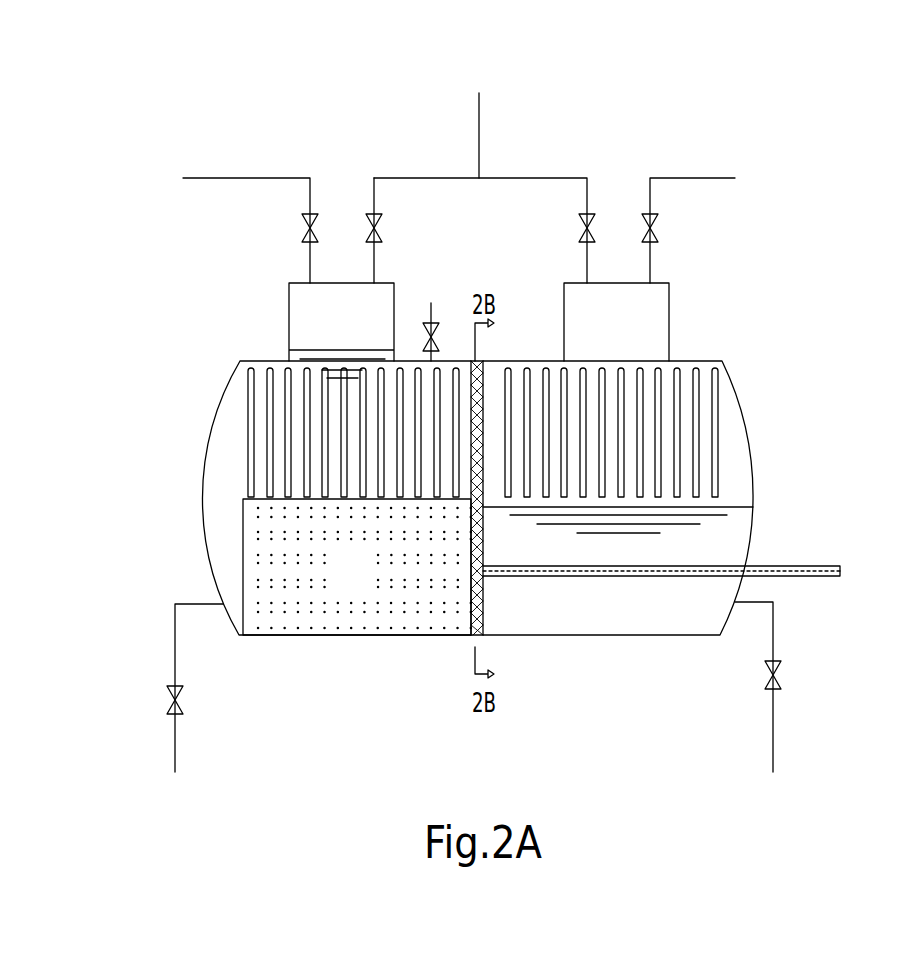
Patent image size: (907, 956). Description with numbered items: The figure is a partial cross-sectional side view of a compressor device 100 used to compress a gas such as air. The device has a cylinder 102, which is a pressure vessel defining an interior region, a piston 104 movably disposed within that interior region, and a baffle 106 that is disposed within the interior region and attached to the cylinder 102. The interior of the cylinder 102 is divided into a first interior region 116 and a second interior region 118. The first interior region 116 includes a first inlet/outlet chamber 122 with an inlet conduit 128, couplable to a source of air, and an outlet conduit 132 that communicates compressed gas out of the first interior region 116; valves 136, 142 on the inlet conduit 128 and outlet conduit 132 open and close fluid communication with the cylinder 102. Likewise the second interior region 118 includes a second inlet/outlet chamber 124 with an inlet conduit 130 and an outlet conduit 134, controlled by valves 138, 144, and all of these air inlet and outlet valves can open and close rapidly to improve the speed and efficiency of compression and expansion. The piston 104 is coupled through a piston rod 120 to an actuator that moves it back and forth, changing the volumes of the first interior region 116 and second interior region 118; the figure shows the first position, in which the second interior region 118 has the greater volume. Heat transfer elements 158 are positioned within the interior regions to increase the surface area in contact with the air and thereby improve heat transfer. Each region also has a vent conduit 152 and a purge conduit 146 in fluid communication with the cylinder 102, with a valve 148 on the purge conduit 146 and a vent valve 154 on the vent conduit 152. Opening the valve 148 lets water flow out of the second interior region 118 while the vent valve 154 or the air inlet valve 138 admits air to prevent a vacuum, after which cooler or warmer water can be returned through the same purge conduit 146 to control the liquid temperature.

The compressor device 100 is at (832, 408).
The cylinder 102 is at (738, 400).
The piston 104 is at (373, 586).
The baffle 106 is at (483, 361).
The first interior region 116 is at (215, 488).
The second interior region 118 is at (737, 455).
The piston rod 120 is at (842, 571).
The first inlet/outlet chamber 122 is at (310, 318).
The second inlet/outlet chamber 124 is at (640, 311).
The inlet conduit 128 is at (212, 178).
The inlet conduit 130 is at (705, 178).
The outlet conduit 132 is at (374, 178).
The outlet conduit 134 is at (509, 178).
The air inlet valve 136 is at (305, 228).
The air inlet valve 138 is at (655, 228).
The air outlet valve 142 is at (380, 228).
The air outlet valve 144 is at (583, 228).
The purge conduit 146 is at (805, 640).
The valve 148 is at (805, 700).
The vent conduit 152 is at (431, 310).
The vent valve 154 is at (430, 333).
The heat transfer element 158 is at (248, 410).